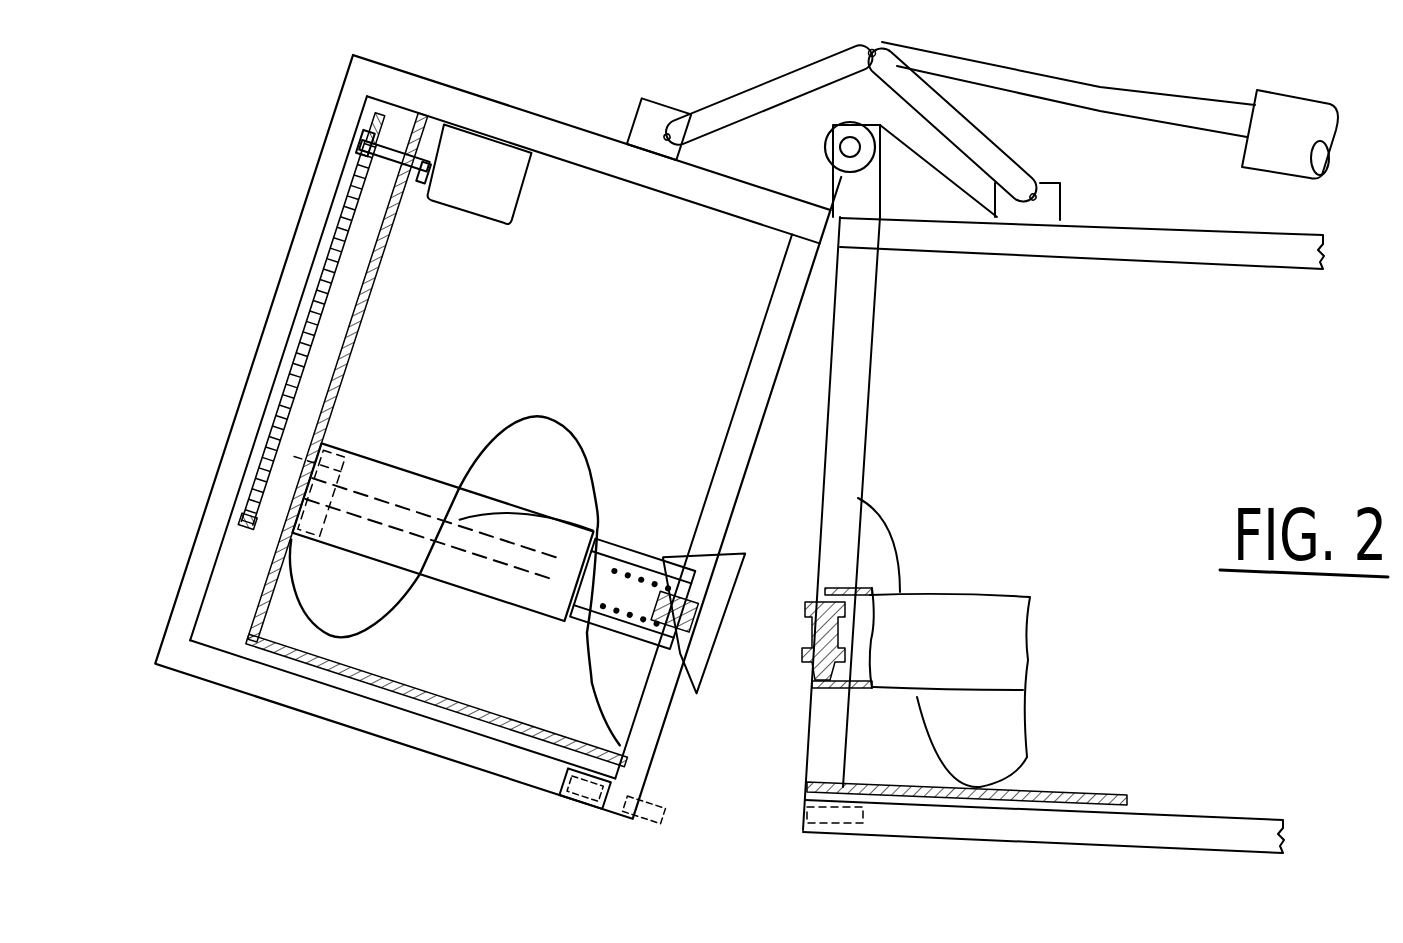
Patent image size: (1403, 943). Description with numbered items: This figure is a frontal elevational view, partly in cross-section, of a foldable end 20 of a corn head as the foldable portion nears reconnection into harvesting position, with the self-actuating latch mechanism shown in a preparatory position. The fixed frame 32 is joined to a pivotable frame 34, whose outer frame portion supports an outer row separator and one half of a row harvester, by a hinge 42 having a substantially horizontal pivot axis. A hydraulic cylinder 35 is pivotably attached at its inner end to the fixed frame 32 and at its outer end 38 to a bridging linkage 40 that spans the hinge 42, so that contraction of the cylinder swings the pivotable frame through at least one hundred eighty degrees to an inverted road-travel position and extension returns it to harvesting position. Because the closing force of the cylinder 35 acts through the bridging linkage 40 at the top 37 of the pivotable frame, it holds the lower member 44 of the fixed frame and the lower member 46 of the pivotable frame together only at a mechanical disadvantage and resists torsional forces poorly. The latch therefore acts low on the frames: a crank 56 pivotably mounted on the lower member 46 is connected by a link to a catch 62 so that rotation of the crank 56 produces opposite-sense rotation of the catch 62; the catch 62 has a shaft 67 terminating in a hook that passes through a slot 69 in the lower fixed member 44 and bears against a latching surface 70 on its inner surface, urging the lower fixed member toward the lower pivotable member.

The auger conveyor frame assembly 20 is at (292, 233).
The fixed frame 32 is at (1116, 264).
The pivotable frame 34 is at (523, 106).
The hydraulic cylinder 35 is at (1244, 156).
The top of the pivotable frame 37 is at (727, 200).
The outer end of the hydraulic cylinder 38 is at (867, 43).
The bridging linkage 40 is at (758, 98).
The hinge 42 is at (876, 106).
The lower member of the fixed frame 44 is at (820, 833).
The lower member of the pivotable frame 46 is at (600, 808).
The crank 56 is at (547, 783).
The catch 62 is at (663, 790).
The shaft 67 is at (700, 812).
The slot 69 is at (803, 812).
The latching surface 70 is at (864, 806).